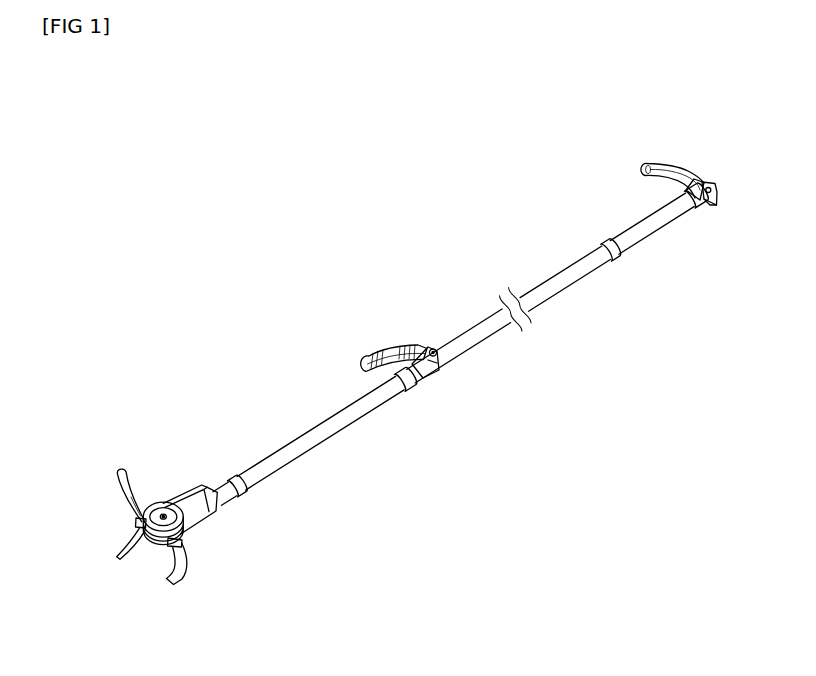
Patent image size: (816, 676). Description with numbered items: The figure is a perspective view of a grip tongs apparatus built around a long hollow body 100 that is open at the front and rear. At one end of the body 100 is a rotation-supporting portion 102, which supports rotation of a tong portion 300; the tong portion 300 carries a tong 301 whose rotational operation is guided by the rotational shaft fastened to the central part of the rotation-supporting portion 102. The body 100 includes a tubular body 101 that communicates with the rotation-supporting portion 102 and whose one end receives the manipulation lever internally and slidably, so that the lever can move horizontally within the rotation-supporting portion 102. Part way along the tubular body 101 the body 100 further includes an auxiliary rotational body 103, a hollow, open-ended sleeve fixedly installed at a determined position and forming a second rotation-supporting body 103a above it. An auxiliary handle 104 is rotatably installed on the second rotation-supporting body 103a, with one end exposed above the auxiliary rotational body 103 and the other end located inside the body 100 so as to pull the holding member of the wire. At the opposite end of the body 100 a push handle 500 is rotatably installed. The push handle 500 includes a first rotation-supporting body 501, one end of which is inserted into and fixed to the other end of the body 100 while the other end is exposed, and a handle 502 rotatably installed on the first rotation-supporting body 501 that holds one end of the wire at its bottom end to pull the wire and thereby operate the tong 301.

The body 100 is at (242, 443).
The tubular body 101 is at (307, 430).
The rotation-supporting portion 102 is at (196, 483).
The auxiliary rotational body 103 is at (427, 378).
The second rotation-supporting body 103a is at (437, 373).
The auxiliary handle 104 is at (398, 345).
The tong portion 300 is at (156, 592).
The tong 301 is at (127, 496).
The push handle 500 is at (710, 150).
The first rotation-supporting body 501 is at (718, 187).
The handle 502 is at (690, 166).